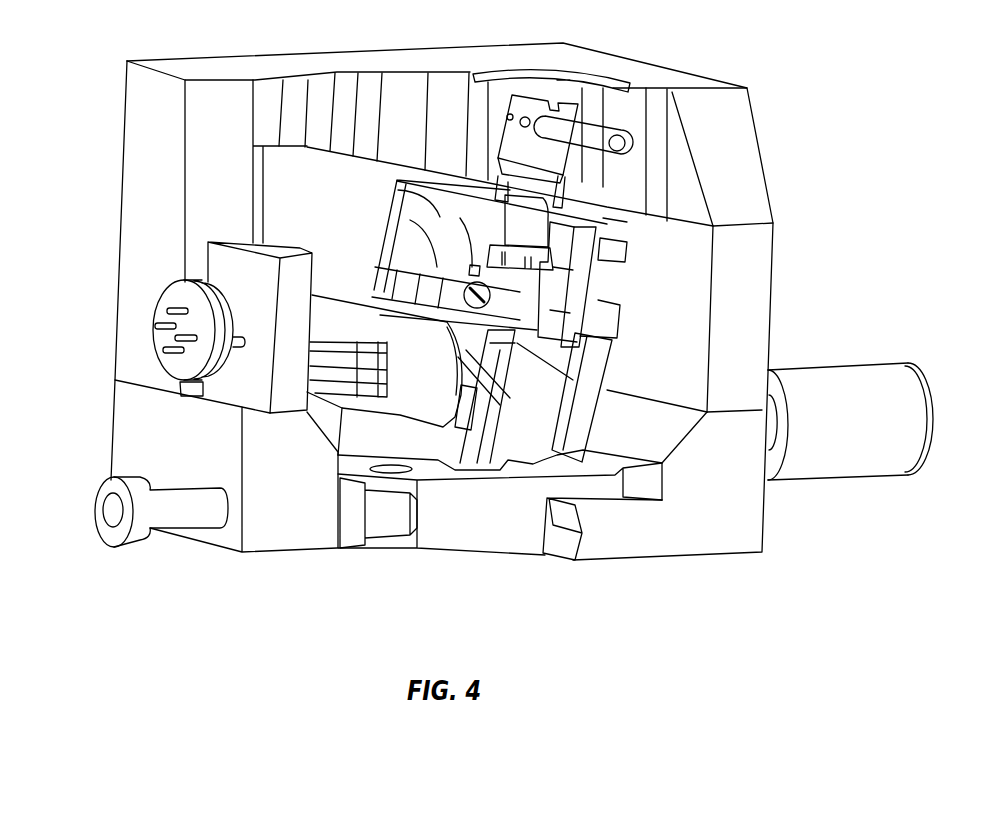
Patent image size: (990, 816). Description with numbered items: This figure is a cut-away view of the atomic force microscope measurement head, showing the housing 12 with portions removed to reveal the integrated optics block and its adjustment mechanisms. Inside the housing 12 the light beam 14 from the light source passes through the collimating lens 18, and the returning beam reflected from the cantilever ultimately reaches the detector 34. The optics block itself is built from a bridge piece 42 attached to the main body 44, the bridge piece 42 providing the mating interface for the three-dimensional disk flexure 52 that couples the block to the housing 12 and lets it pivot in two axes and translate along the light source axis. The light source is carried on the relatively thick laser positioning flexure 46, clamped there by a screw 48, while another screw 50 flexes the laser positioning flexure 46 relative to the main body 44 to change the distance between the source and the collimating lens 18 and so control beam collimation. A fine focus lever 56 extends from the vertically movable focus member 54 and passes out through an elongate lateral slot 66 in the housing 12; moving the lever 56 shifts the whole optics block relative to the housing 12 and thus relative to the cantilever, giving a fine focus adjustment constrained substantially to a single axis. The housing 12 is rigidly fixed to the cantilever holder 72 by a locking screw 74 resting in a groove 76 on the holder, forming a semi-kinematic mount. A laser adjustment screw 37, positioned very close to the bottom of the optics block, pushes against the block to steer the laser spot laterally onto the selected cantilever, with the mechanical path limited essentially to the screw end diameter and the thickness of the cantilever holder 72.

The housing 12 is at (740, 147).
The light beam 14 is at (507, 240).
The collimating lens 18 is at (503, 340).
The detector 34 is at (222, 268).
The laser adjustment screw 37 is at (915, 402).
The bridge piece 42 is at (627, 270).
The main body 44 is at (592, 378).
The laser positioning flexure 46 is at (600, 327).
The screw 48 is at (440, 218).
The screw 50 is at (432, 225).
The disk flexure 52 is at (627, 250).
The focus member 54 is at (530, 107).
The fine focus lever 56 is at (593, 132).
The elongate lateral slot 66 is at (633, 143).
The cantilever holder 72 is at (437, 538).
The locking screw 74 is at (135, 540).
The groove 76 is at (363, 518).